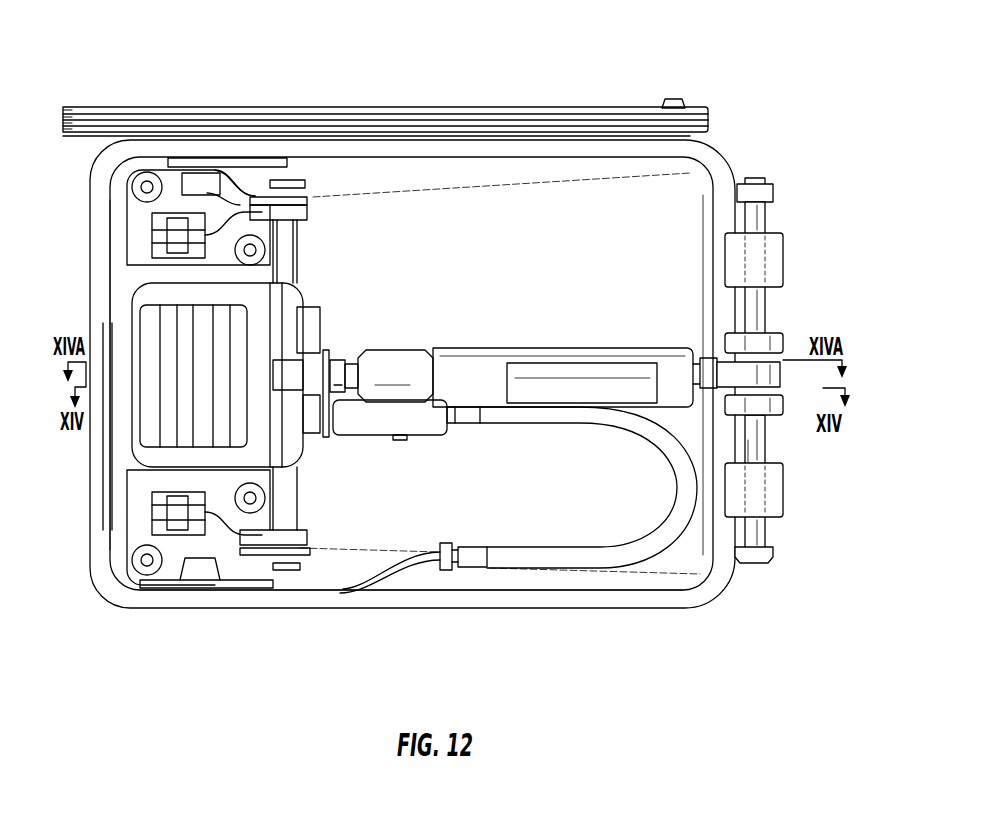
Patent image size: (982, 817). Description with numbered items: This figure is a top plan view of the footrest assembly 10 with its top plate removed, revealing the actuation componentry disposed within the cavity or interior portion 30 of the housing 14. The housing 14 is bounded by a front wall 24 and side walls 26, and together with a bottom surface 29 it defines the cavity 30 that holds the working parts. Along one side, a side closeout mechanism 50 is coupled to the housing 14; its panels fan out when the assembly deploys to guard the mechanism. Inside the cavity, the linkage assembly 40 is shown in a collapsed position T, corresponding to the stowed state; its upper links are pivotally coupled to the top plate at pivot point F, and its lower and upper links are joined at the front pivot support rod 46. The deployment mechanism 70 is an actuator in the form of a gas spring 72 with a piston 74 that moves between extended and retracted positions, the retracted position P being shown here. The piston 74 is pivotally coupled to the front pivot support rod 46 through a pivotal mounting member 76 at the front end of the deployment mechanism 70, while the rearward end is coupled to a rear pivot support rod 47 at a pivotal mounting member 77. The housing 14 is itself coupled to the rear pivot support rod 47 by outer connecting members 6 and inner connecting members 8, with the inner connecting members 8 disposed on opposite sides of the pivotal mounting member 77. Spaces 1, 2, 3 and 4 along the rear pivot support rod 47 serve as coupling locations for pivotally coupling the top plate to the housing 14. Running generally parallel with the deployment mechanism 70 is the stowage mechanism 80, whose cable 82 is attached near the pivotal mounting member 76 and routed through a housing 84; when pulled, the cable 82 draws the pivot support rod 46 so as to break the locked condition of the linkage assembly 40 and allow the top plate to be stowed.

The footrest assembly 10 is at (604, 43).
The side wall 26 is at (558, 135).
The side closeout mechanism 50 is at (626, 102).
The linkage assembly 40 is at (315, 188).
The cavity 30 is at (667, 205).
The bottom surface 29 is at (598, 234).
The space 1 is at (767, 217).
The outer connecting member 6 is at (777, 260).
The space 2 is at (763, 310).
The inner connecting member 8 is at (778, 343).
The pivotal mounting member 77 is at (782, 364).
The space 3 is at (767, 427).
The rear pivot support rod 47 is at (768, 456).
The space 4 is at (763, 528).
The front wall 24 is at (93, 262).
The pivot point F is at (173, 235).
The collapsed position T is at (307, 213).
The piston 74 is at (346, 362).
The retracted position P is at (362, 360).
The deployment mechanism 70 is at (479, 338).
The gas spring 72 is at (565, 348).
The stowage mechanism 80 is at (481, 432).
The pivotal mounting member 76 is at (307, 378).
The cable 82 is at (358, 585).
The pivot support rod 46 is at (283, 518).
The housing 84 is at (662, 547).
The housing 14 is at (659, 614).